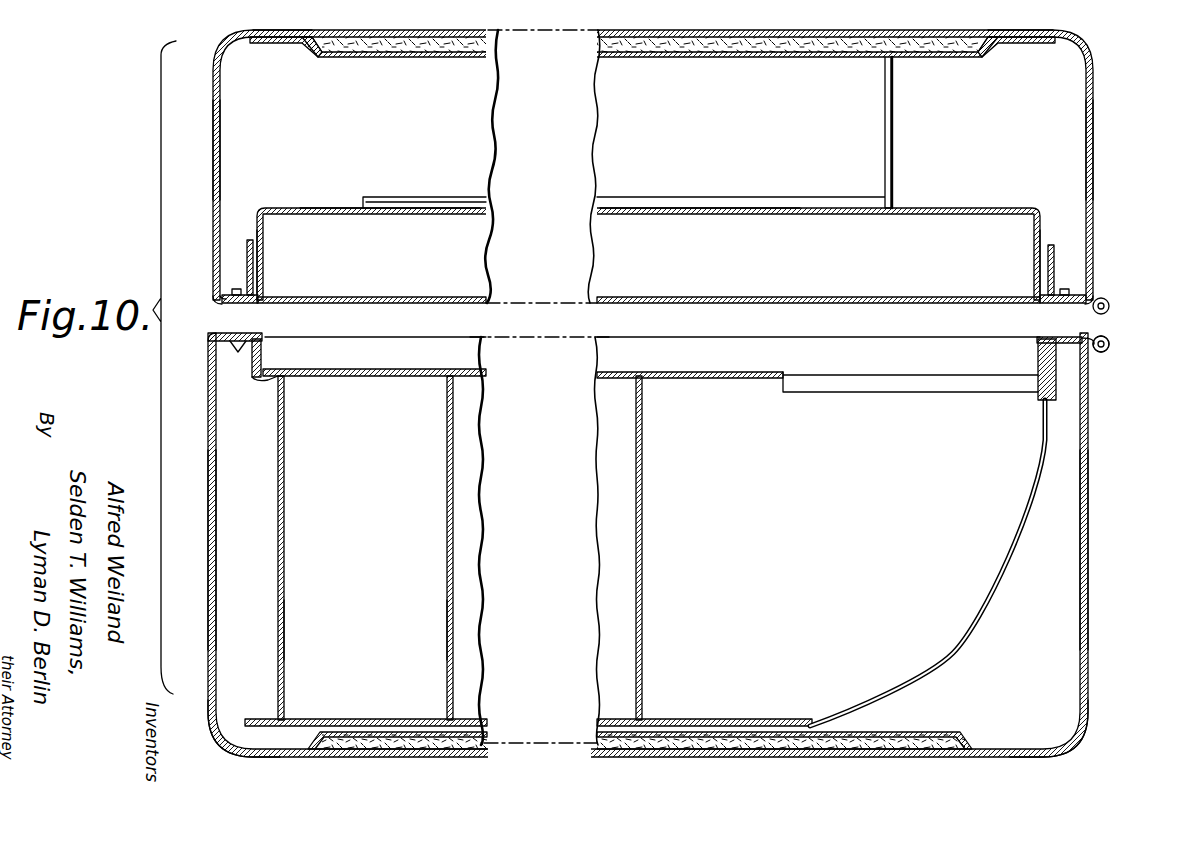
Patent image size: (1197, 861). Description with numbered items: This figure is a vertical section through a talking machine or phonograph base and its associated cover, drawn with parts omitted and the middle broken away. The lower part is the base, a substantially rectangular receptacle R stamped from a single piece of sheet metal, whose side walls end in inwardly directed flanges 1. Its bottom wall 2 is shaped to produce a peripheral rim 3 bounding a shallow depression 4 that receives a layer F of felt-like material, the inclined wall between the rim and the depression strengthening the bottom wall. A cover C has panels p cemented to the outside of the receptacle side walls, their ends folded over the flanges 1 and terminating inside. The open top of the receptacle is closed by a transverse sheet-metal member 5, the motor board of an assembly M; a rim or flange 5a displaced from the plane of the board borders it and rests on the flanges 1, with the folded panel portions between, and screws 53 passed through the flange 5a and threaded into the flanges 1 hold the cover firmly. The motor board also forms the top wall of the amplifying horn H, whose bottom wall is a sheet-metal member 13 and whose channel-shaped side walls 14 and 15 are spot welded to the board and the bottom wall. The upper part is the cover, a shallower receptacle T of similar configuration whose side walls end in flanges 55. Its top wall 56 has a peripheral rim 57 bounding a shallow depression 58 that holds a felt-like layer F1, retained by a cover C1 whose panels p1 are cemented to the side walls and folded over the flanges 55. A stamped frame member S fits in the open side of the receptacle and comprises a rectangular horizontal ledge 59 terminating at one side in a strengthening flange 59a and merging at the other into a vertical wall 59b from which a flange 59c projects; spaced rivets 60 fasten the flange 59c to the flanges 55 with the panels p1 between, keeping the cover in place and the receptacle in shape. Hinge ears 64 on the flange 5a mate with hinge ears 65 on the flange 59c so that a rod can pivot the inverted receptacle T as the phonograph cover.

The cover C1 is at (1093, 100).
The top wall 56 is at (798, 57).
The shallow depression 58 is at (415, 50).
The peripheral rim 57 is at (292, 38).
The receptacle T is at (222, 132).
The panels p1 is at (213, 145).
The ledge or rim 59 is at (342, 215).
The frame member S is at (301, 208).
The strengthening flange 59a is at (362, 199).
The vertical wall 59b is at (266, 262).
The flange 59c is at (230, 302).
The rivets 60 is at (250, 240).
The inwardly directed flanges 55 is at (214, 264).
The hinge ears 65 is at (1109, 300).
The layer of felt-like material F1 is at (598, 34).
The cover C is at (770, 758).
The receptacle R is at (216, 550).
The panels p is at (208, 633).
The peripheral rim 3 is at (266, 752).
The shallow depression 4 is at (352, 746).
The bottom wall 2 is at (690, 732).
The bottom wall 13 is at (335, 719).
The side wall 14 is at (284, 578).
The side wall 15 is at (447, 578).
The amplifying horn H is at (447, 627).
The transverse member 5 is at (380, 377).
The inwardly directed flanges 1 is at (248, 355).
The screws 53 is at (222, 336).
The rim or flange 5a is at (254, 334).
The hinge ears 64 is at (1108, 351).
The assembly M is at (268, 497).
The layer of felt-like material F is at (597, 752).